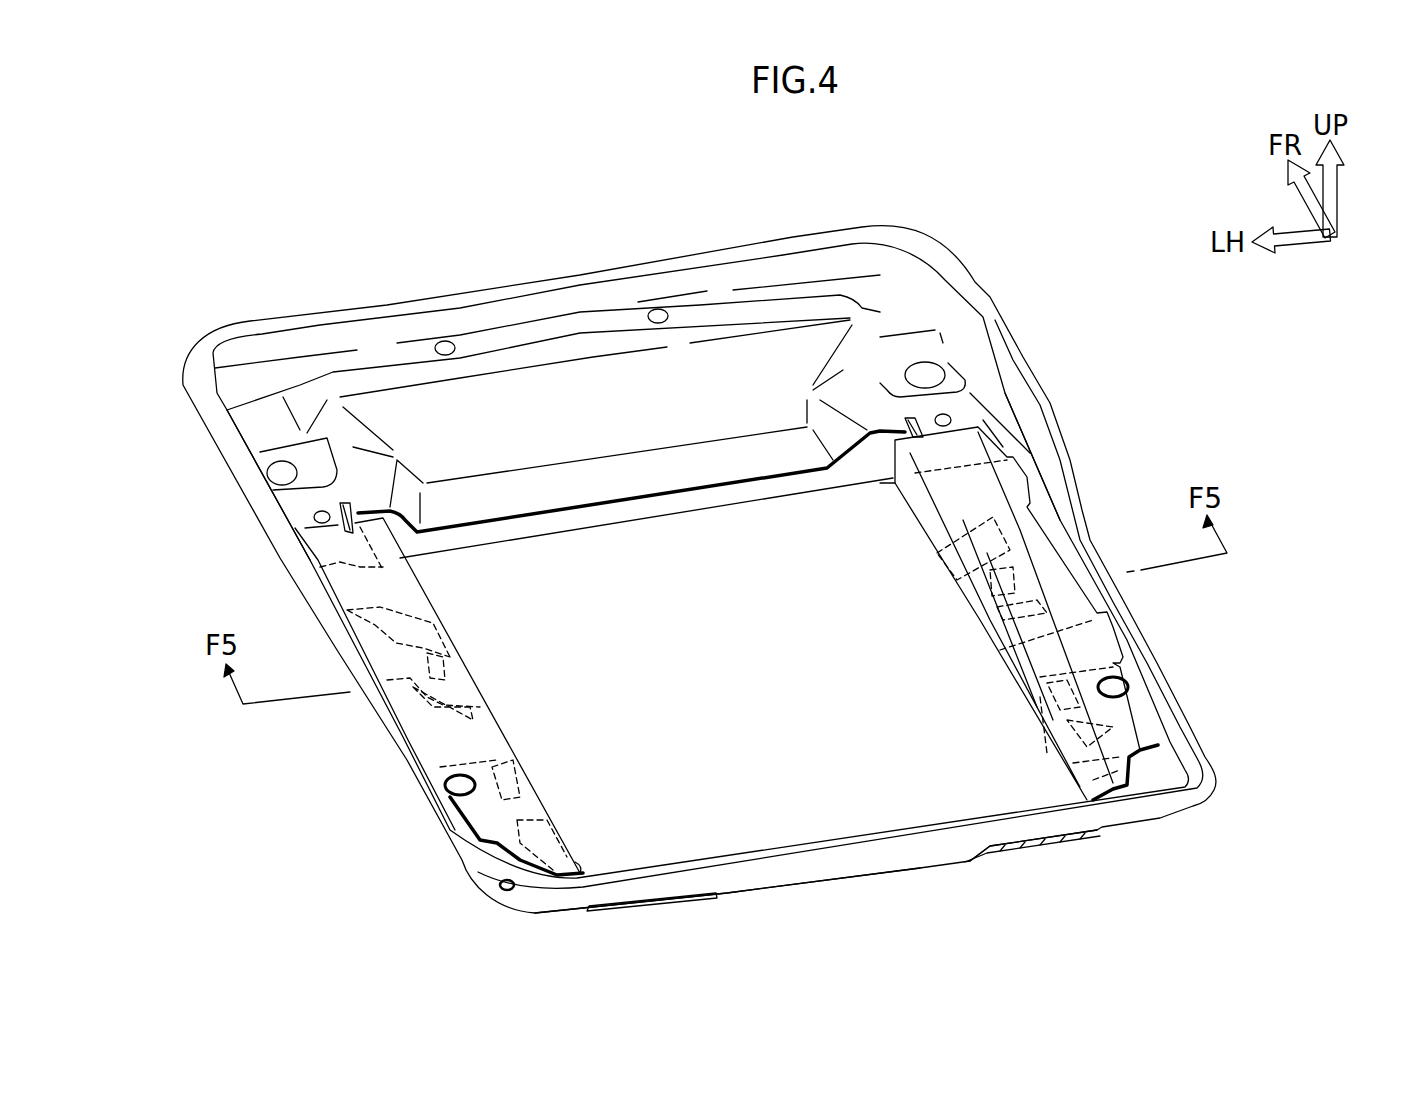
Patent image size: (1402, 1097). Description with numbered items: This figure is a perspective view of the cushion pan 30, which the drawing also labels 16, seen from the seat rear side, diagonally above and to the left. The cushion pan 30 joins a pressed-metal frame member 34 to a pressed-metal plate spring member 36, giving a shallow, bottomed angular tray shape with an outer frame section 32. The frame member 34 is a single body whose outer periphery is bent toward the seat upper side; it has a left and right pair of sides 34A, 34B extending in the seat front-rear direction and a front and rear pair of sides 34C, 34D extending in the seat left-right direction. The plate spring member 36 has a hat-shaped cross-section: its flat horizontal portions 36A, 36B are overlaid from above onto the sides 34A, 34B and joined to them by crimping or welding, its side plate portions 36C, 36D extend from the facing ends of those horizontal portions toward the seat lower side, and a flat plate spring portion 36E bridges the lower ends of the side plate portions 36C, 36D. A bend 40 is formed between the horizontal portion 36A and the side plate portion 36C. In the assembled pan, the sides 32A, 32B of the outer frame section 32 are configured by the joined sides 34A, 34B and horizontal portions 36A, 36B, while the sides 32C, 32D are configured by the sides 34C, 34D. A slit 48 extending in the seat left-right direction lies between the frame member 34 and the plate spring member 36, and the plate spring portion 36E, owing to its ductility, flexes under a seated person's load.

The cushion pan 30 is at (348, 196).
The seat frame member 16 is at (699, 549).
The outer frame section 32 is at (927, 222).
The frame member 34 is at (738, 245).
The front side of frame member 34C is at (535, 400).
The side of outer frame section 32C is at (547, 343).
The slit 48 is at (619, 505).
The plate spring member 36 is at (742, 545).
The side of outer frame section 32A is at (262, 742).
The left side of frame member 34A is at (400, 677).
The horizontal portion 36A is at (432, 742).
The bend 40 is at (490, 730).
The side plate portion 36C is at (590, 876).
The side of outer frame section 32B is at (1178, 298).
The right side of frame member 34B is at (1033, 573).
The horizontal portion 36B is at (977, 487).
The side plate portion 36D is at (1013, 668).
The side of outer frame section 32D is at (816, 871).
The rear side of frame member 34D is at (800, 870).
The plate spring portion 36E is at (877, 780).